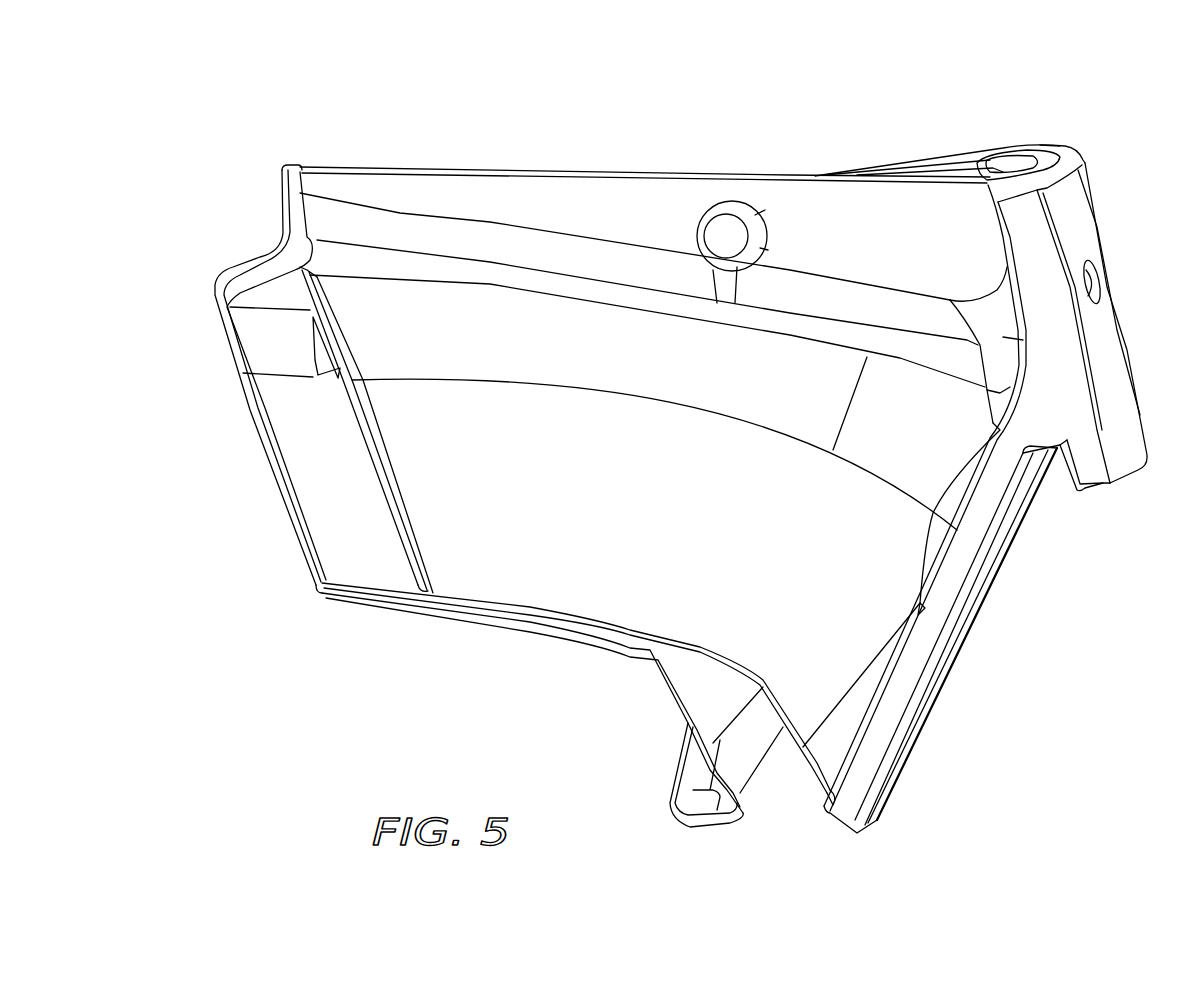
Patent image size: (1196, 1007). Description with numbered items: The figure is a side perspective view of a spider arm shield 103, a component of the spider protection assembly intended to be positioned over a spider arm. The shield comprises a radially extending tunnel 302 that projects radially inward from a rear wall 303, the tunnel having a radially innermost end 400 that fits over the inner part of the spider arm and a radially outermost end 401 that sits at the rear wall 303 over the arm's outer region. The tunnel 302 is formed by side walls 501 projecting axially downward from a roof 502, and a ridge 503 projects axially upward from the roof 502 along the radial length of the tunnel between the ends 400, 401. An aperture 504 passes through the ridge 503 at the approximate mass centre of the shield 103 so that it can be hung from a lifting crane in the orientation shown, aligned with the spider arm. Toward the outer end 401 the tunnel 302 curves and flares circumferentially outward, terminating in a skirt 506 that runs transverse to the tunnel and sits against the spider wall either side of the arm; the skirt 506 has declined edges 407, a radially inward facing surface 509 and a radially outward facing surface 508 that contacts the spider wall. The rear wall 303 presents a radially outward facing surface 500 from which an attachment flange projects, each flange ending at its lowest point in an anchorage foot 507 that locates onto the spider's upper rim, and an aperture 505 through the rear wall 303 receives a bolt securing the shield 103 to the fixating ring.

The spider arm shield 103 is at (962, 112).
The rear wall 303 is at (1060, 155).
The radially outward facing surface 500 is at (1090, 180).
The aperture 505 is at (1097, 283).
The radially outermost end 401 is at (1000, 342).
The roof 502 is at (465, 270).
The ridge 503 is at (605, 207).
The aperture 504 is at (735, 228).
The side walls 501 is at (689, 498).
The radially innermost end 400 is at (222, 335).
The tunnel 302 is at (520, 628).
The skirt 506 is at (685, 790).
The radially inward facing surface 509 is at (867, 727).
The edges 407 is at (900, 702).
The radially outward facing surface 508 is at (975, 623).
The anchorage foot 507 is at (1090, 477).